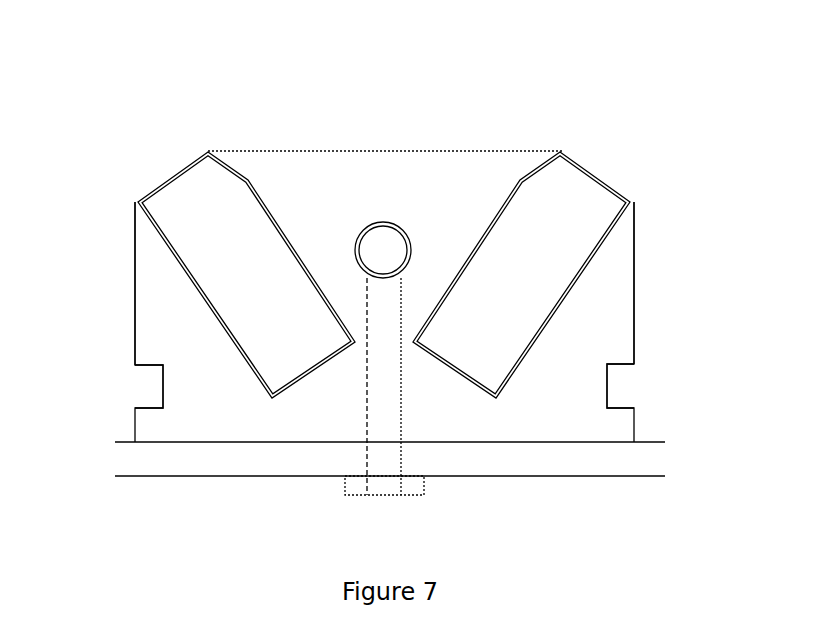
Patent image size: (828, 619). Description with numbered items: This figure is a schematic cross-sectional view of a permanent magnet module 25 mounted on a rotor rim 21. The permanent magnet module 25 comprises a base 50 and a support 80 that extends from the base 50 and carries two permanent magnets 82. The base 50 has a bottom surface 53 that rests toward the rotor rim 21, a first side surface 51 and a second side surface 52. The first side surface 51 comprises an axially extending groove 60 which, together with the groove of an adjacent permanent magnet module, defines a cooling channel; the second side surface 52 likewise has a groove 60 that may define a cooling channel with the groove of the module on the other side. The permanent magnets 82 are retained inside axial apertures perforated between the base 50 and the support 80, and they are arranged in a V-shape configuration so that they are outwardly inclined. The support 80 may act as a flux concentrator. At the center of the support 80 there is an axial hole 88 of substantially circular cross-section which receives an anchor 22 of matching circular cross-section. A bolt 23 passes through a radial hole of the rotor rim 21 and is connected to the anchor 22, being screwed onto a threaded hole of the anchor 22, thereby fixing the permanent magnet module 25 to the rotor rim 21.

The rotor rim 21 is at (588, 462).
The anchor 22 is at (383, 246).
The bolt 23 is at (345, 479).
The permanent magnet module 25 is at (514, 98).
The base 50 is at (230, 418).
The first side surface 51 is at (634, 265).
The second side surface 52 is at (133, 283).
The bottom surface 53 is at (493, 437).
The axially extending groove 60 is at (116, 393).
The support 80 is at (297, 160).
The permanent magnet 82 is at (193, 210).
The axial hole 88 is at (356, 243).